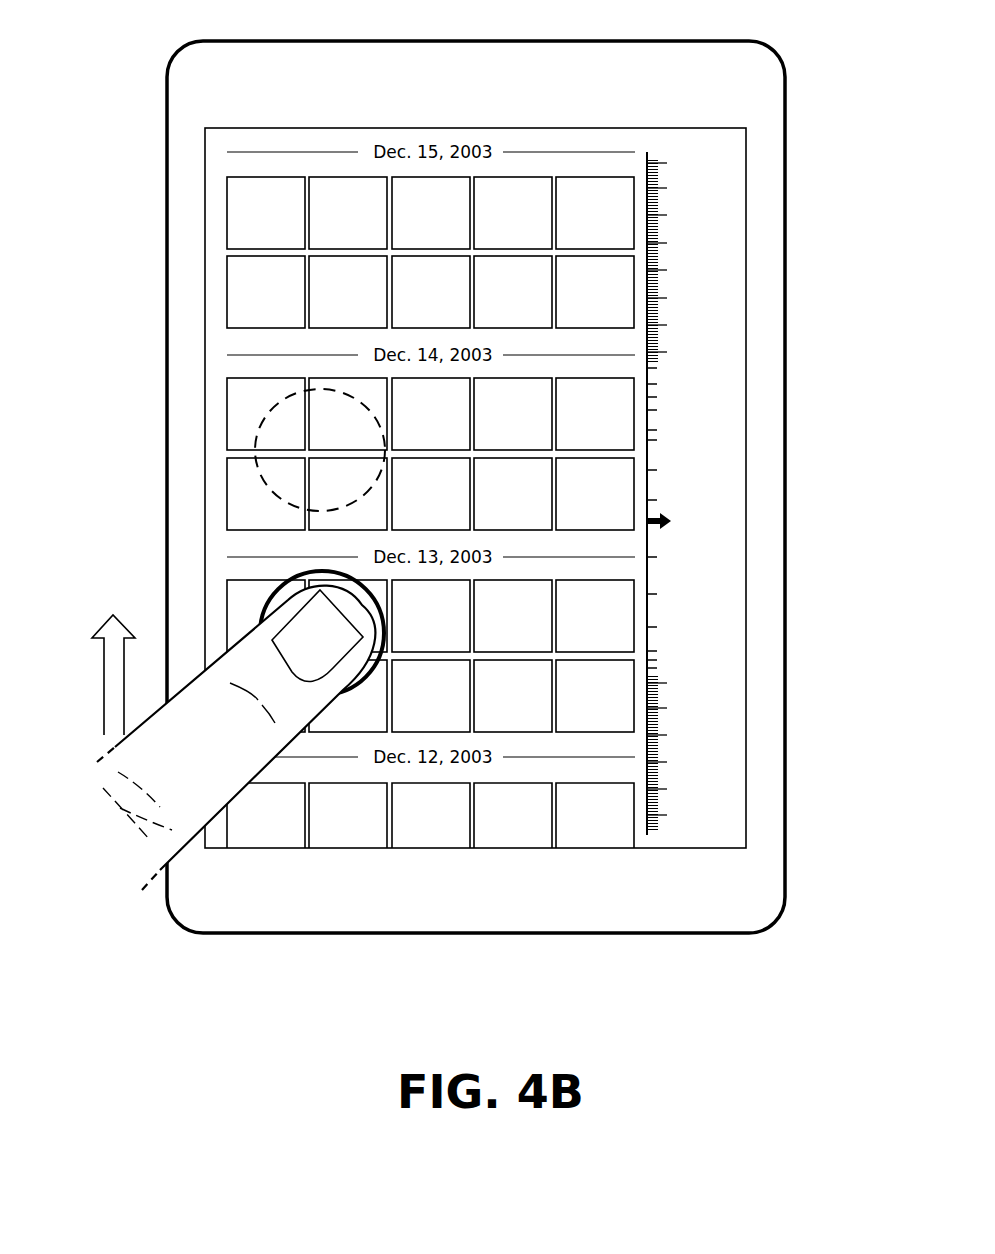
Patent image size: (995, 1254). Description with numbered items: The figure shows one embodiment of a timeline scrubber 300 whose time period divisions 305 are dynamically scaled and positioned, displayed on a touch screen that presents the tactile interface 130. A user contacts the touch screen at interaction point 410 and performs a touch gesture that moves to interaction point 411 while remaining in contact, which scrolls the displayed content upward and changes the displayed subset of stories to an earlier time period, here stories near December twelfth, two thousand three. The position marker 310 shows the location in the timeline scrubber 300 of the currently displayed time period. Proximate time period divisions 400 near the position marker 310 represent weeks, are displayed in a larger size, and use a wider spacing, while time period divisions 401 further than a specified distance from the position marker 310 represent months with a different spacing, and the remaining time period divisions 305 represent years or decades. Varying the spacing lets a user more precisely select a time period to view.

The tactile interface 130 is at (205, 128).
The timeline scrubber 300 is at (758, 422).
The time period divisions 305 is at (737, 243).
The time period divisions representing months 401 is at (735, 407).
The proximate time period divisions 400 is at (755, 470).
The position marker 310 is at (722, 526).
The interaction point 411 is at (253, 443).
The interaction point 410 is at (270, 593).